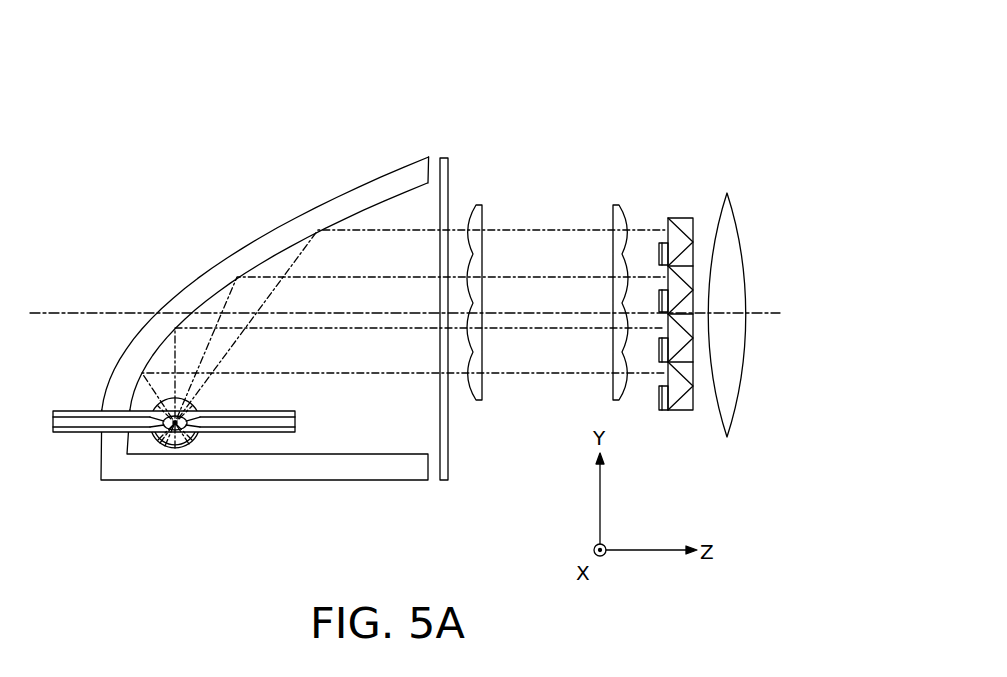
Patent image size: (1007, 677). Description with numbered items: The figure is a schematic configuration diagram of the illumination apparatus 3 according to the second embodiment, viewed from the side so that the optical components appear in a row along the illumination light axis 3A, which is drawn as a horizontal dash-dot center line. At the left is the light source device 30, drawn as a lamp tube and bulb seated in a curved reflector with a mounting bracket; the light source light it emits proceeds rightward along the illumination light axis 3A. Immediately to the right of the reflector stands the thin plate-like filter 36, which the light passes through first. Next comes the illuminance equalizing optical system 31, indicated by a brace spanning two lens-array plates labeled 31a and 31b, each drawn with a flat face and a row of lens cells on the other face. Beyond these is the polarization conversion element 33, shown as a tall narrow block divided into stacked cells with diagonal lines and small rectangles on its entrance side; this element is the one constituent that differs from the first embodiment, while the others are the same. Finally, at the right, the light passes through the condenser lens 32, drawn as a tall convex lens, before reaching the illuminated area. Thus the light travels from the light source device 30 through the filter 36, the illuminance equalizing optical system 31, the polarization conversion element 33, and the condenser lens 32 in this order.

The illumination apparatus 3 is at (722, 98).
The illumination light axis 3A is at (80, 313).
The light source device 30 is at (205, 212).
The illuminance equalizing optical system 31 is at (610, 117).
The first lens array 31a is at (475, 218).
The second lens array 31b is at (616, 218).
The condenser lens 32 is at (725, 200).
The polarization conversion element 33 is at (683, 222).
The filter 36 is at (443, 158).